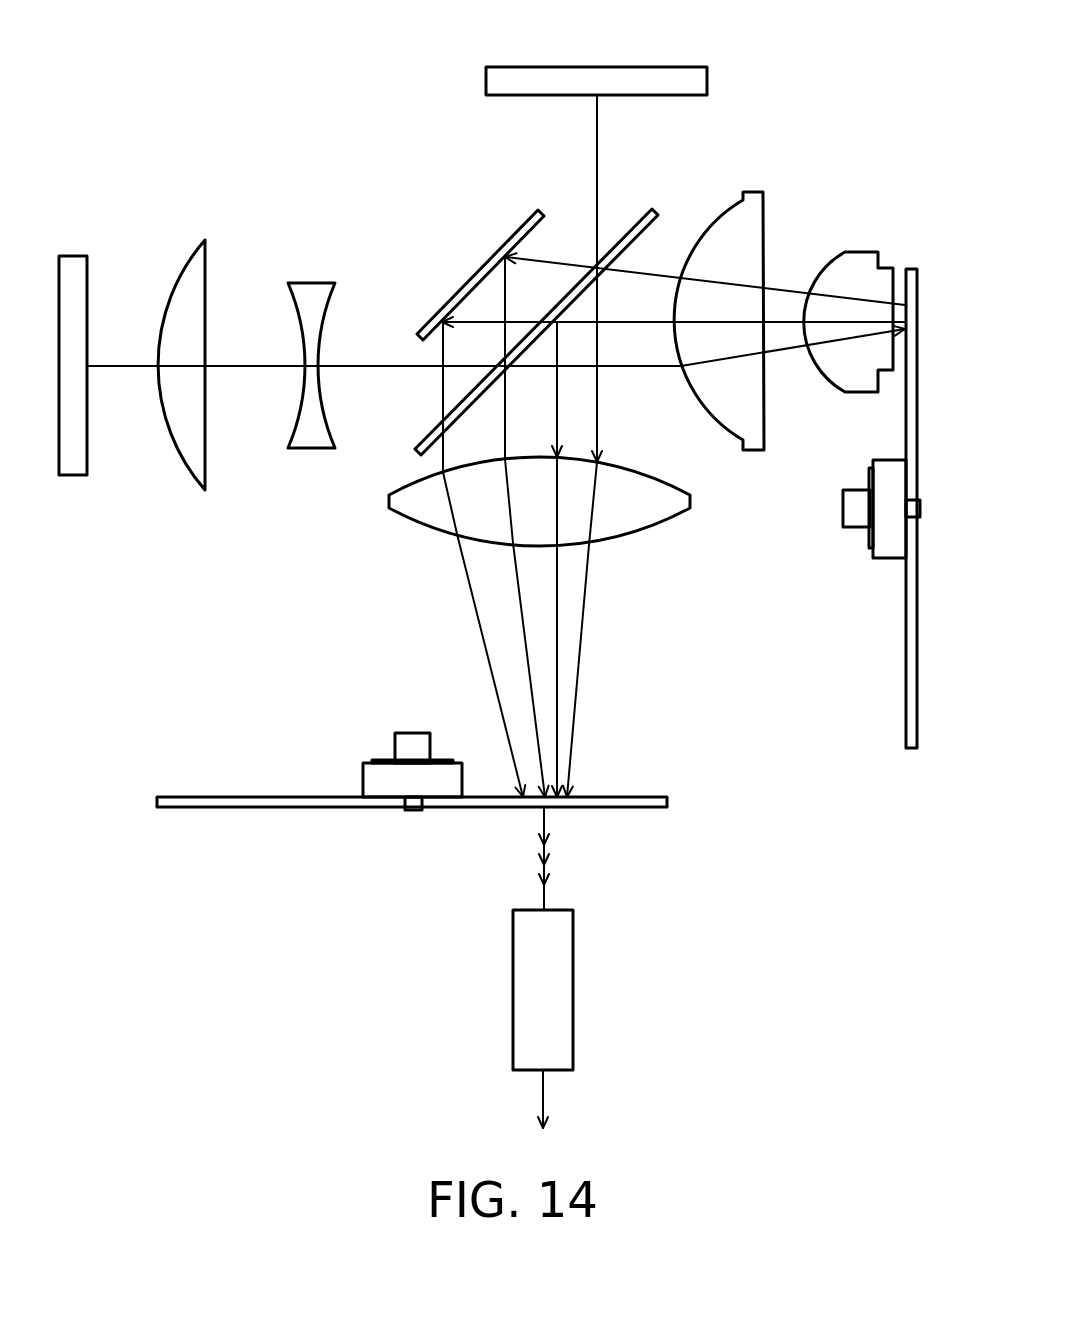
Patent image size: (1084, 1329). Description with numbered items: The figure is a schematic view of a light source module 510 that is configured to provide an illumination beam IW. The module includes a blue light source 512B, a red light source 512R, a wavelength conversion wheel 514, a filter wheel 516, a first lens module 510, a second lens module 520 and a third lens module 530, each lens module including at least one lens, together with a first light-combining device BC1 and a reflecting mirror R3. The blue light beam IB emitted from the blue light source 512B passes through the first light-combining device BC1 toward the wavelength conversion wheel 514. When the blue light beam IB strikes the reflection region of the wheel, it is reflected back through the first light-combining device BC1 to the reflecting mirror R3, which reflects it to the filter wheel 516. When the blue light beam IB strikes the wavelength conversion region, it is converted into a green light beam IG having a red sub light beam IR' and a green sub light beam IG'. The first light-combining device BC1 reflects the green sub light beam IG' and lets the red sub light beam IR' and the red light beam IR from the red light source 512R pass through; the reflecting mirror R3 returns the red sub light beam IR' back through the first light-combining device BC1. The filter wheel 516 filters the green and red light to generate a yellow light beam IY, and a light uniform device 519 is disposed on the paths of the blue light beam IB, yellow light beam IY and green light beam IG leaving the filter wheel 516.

The light source module 510 is at (345, 505).
The blue light source 512B is at (72, 463).
The red light source 512R is at (667, 78).
The wavelength conversion wheel 514 is at (915, 268).
The filter wheel 516 is at (633, 798).
The light uniform device 519 is at (558, 992).
The second lens module 520 is at (625, 523).
The third lens module 530 is at (893, 170).
The reflecting mirror R3 is at (515, 232).
The first light-combining device BC1 is at (425, 438).
The red light beam IR is at (623, 278).
The red sub light beam IR' is at (473, 270).
The blue light beam IB is at (118, 366).
The green light beam IG is at (701, 615).
The green sub light beam IG' is at (554, 527).
The yellow light beam IY is at (544, 875).
The illumination beam IW is at (543, 1097).